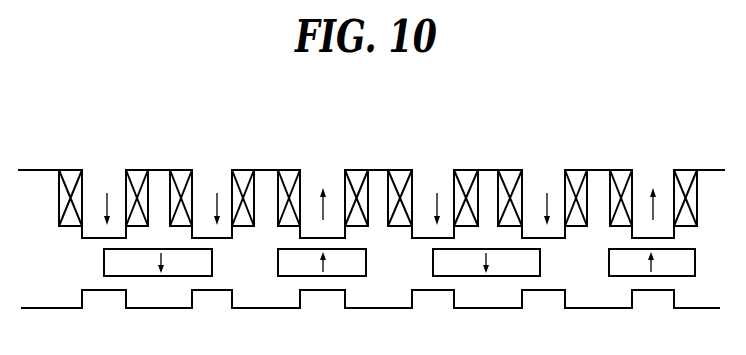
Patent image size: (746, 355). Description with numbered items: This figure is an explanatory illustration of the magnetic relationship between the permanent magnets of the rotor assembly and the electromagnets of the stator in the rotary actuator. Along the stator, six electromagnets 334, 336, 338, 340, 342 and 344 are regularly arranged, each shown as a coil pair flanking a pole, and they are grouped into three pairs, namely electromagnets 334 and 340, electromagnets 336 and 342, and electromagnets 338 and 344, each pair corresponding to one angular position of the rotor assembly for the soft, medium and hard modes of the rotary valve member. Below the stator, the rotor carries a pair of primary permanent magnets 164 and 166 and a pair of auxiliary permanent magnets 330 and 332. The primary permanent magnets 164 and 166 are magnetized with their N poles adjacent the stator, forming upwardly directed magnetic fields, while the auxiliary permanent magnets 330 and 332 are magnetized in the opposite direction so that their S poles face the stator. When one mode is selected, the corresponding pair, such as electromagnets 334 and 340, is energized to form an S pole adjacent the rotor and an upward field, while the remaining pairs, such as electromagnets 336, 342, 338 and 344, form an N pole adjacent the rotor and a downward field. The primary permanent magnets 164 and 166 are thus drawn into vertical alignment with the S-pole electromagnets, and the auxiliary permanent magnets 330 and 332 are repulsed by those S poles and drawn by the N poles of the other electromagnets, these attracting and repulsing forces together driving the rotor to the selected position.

The electromagnet 342 is at (113, 180).
The electromagnet 344 is at (216, 175).
The electromagnet 334 is at (322, 177).
The electromagnet 336 is at (435, 178).
The electromagnet 338 is at (545, 180).
The electromagnet 340 is at (653, 180).
The auxiliary permanent magnet 332 is at (212, 263).
The primary permanent magnet 164 is at (366, 263).
The auxiliary permanent magnet 330 is at (540, 263).
The primary permanent magnet 166 is at (695, 263).